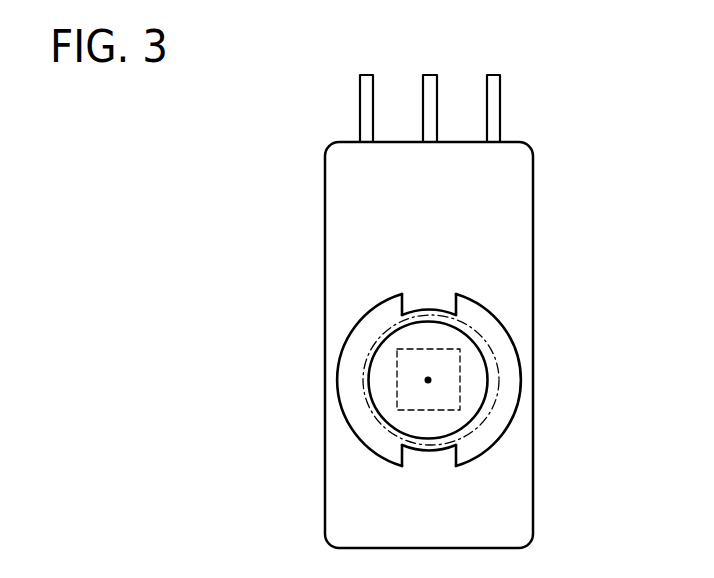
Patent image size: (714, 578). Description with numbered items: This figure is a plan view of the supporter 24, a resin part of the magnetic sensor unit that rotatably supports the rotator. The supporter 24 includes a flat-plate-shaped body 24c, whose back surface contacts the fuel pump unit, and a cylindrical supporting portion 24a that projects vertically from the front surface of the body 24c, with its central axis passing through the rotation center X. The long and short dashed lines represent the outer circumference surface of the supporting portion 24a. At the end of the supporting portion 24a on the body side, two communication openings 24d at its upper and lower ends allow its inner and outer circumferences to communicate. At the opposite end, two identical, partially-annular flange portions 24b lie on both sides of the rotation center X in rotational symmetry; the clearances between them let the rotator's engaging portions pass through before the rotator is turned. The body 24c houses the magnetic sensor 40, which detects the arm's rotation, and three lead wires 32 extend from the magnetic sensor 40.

The supporter 24 is at (517, 205).
The supporting portion 24a is at (432, 312).
The flange portions 24b is at (508, 400).
The body 24c is at (513, 495).
The communication openings 24d is at (470, 327).
The lead wires 32 is at (368, 73).
The magnetic sensor 40 is at (462, 362).
The rotation center X is at (428, 380).